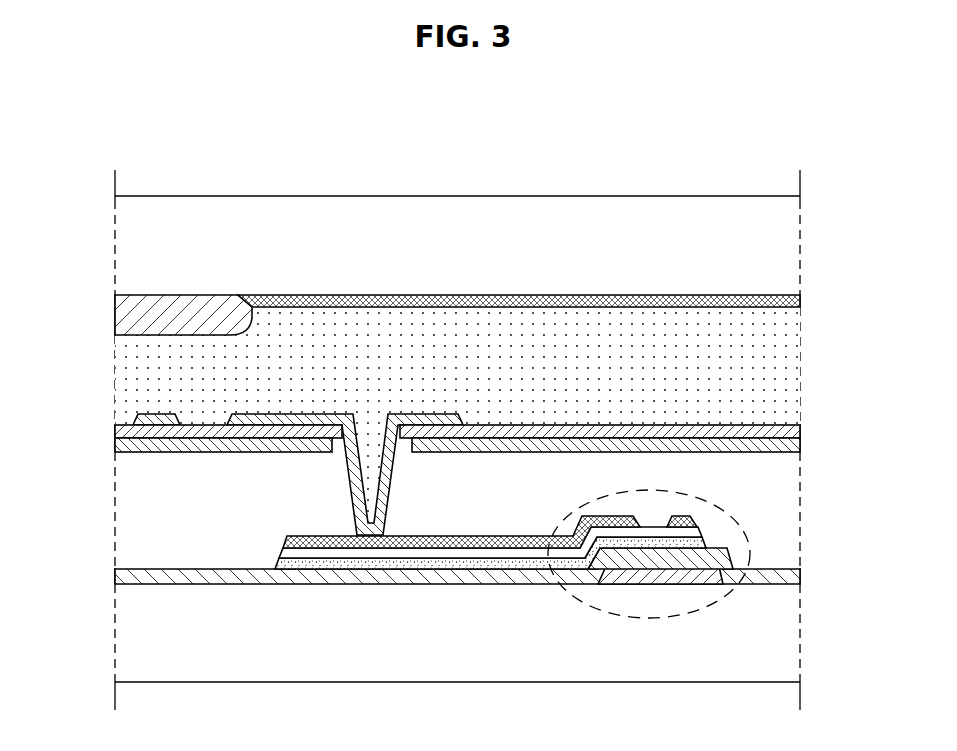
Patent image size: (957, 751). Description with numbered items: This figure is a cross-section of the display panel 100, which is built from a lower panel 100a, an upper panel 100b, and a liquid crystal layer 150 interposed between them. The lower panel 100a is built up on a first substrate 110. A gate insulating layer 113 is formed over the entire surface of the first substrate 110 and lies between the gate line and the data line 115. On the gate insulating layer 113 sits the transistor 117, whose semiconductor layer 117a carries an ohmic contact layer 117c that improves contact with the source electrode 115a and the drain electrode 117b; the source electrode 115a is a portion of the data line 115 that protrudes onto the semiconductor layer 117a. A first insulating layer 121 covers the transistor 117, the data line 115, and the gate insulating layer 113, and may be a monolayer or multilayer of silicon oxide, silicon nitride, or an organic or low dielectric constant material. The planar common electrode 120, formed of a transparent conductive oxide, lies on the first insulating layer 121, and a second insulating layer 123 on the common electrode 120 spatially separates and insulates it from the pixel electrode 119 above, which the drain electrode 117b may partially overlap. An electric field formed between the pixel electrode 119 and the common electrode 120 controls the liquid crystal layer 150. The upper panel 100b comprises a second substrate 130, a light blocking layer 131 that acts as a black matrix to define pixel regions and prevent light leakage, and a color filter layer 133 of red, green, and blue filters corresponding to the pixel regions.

The display panel 100 is at (440, 140).
The lower panel 100a is at (808, 440).
The upper panel 100b is at (808, 198).
The first substrate 110 is at (130, 628).
The gate insulating layer 113 is at (270, 577).
The data line 115 is at (692, 527).
The source electrode 115a is at (670, 523).
The transistor 117 is at (512, 609).
The semiconductor layer 117a is at (417, 565).
The drain electrode 117b is at (540, 552).
The ohmic contact layer 117c is at (500, 546).
The pixel electrode 119 is at (240, 417).
The common electrode 120 is at (130, 443).
The first insulating layer 121 is at (130, 516).
The second insulating layer 123 is at (600, 430).
The second substrate 130 is at (130, 253).
The light blocking layer 131 is at (675, 296).
The color filter layer 133 is at (125, 312).
The liquid crystal layer 150 is at (808, 309).